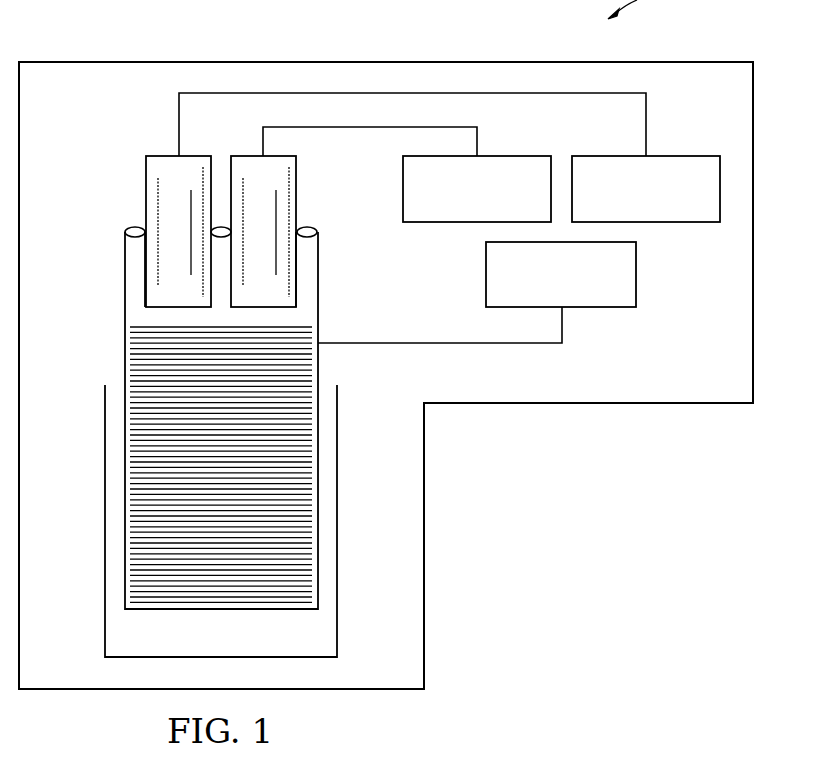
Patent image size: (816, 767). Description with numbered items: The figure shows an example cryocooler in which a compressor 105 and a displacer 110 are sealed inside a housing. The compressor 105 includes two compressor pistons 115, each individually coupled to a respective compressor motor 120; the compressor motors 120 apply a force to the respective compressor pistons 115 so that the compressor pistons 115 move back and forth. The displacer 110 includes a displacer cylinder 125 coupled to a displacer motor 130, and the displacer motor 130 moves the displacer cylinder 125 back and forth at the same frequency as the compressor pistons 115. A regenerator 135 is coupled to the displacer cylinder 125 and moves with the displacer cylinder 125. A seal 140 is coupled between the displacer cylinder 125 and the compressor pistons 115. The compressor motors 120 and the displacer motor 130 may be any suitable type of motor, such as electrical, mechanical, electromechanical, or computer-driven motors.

The compressor 105 is at (116, 232).
The displacer 110 is at (113, 328).
The compressor piston 115 is at (163, 156).
The compressor motor 120 is at (498, 156).
The displacer cylinder 125 is at (308, 361).
The displacer motor 130 is at (583, 308).
The regenerator 135 is at (149, 473).
The seal 140 is at (135, 227).